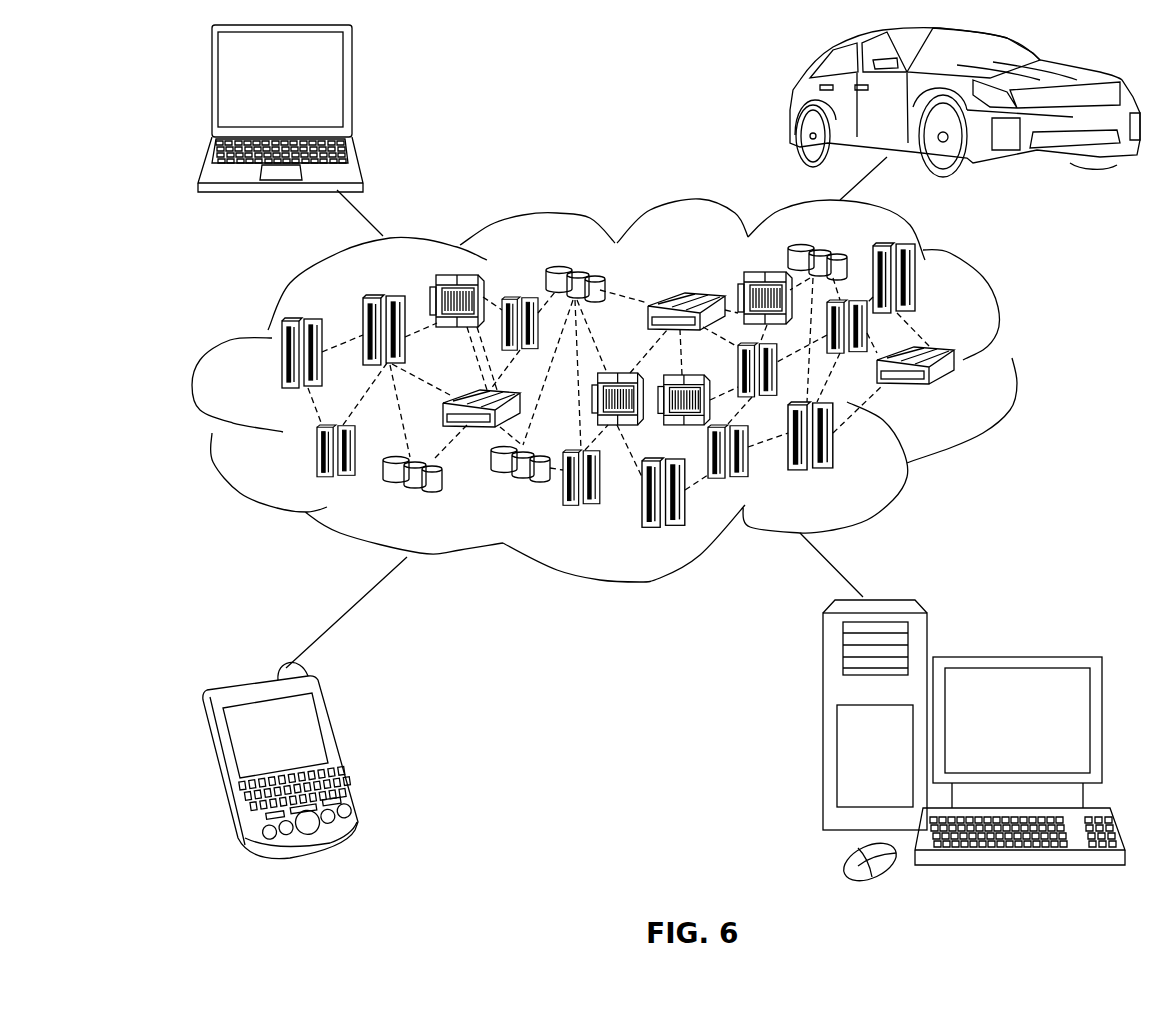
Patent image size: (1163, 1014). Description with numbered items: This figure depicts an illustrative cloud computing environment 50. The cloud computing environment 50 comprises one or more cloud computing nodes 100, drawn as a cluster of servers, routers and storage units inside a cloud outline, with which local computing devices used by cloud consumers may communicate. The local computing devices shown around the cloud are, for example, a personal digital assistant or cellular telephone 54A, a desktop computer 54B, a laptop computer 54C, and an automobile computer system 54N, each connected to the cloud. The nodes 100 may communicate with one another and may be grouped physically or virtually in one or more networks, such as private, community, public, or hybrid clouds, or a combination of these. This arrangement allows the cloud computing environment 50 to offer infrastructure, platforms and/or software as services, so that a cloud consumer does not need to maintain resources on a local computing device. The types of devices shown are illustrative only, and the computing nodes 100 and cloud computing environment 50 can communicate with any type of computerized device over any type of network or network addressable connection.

The cloud computing environment 50 is at (1013, 362).
The cloud computing nodes 100 is at (963, 396).
The personal digital assistant or cellular telephone 54A is at (342, 750).
The desktop computer 54B is at (1012, 655).
The laptop computer 54C is at (352, 88).
The automobile computer system 54N is at (795, 102).